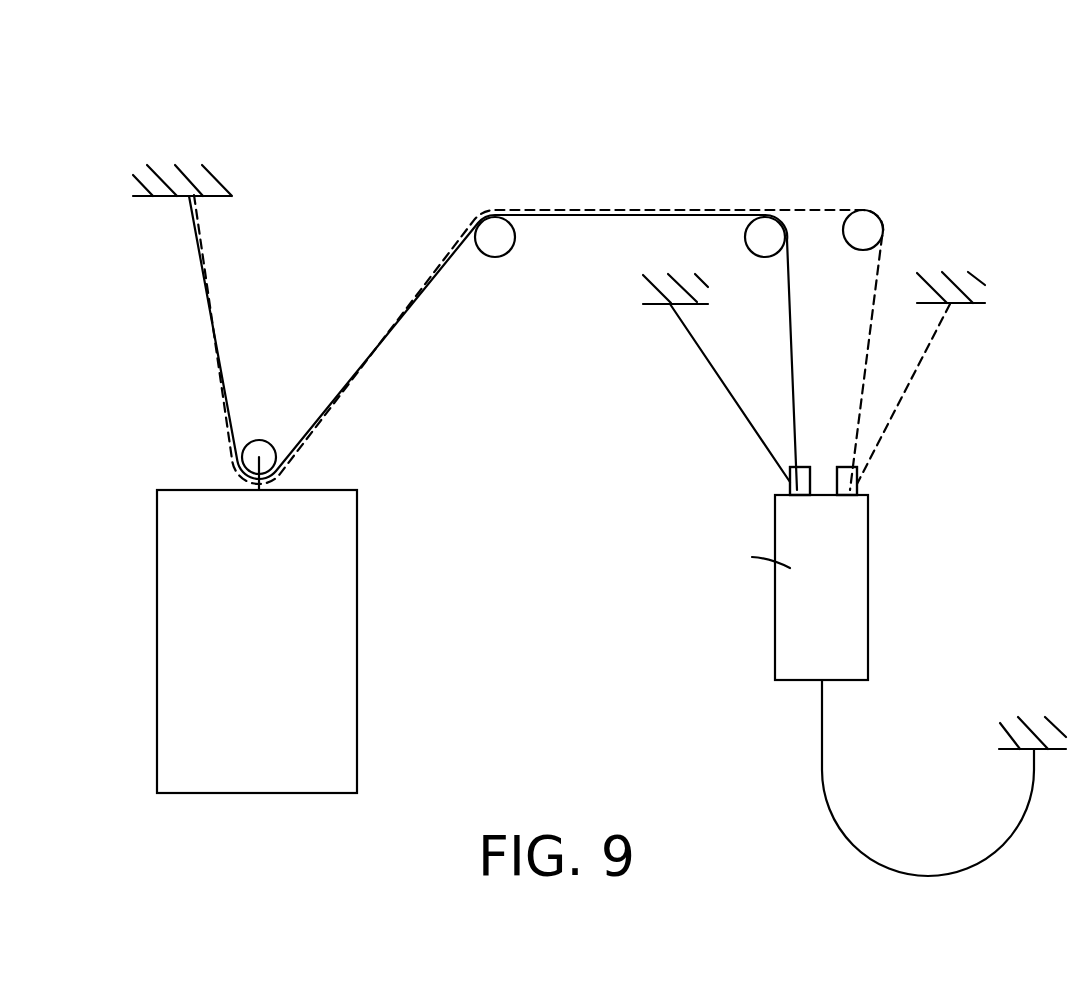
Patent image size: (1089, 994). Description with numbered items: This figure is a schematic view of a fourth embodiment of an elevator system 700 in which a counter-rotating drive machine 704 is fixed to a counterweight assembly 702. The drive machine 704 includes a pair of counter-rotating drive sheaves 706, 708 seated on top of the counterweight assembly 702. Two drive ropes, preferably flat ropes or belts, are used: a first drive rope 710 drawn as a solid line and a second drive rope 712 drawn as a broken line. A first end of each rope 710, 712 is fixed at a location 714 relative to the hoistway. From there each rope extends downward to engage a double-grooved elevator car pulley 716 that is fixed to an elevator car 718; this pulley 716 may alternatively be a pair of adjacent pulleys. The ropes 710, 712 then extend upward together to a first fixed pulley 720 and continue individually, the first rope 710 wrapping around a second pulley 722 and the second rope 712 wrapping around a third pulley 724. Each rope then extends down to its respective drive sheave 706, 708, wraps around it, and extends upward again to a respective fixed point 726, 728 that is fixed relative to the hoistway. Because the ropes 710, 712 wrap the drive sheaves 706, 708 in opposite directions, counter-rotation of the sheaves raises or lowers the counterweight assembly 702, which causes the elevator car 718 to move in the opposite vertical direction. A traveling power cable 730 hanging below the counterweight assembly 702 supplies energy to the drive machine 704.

The elevator system 700 is at (335, 121).
The counterweight assembly 702 is at (766, 622).
The counter-rotating drive machine 704 is at (756, 481).
The drive sheave 706 is at (792, 480).
The drive sheave 708 is at (856, 484).
The first drive rope 710 is at (214, 350).
The second drive rope 712 is at (208, 277).
The fixed location 714 is at (163, 198).
The elevator car pulley 716 is at (260, 452).
The elevator car 718 is at (330, 565).
The first fixed pulley 720 is at (498, 238).
The second pulley 722 is at (760, 240).
The third pulley 724 is at (860, 228).
The fixed point 726 is at (663, 306).
The fixed point 728 is at (963, 305).
The traveling power cable 730 is at (913, 877).